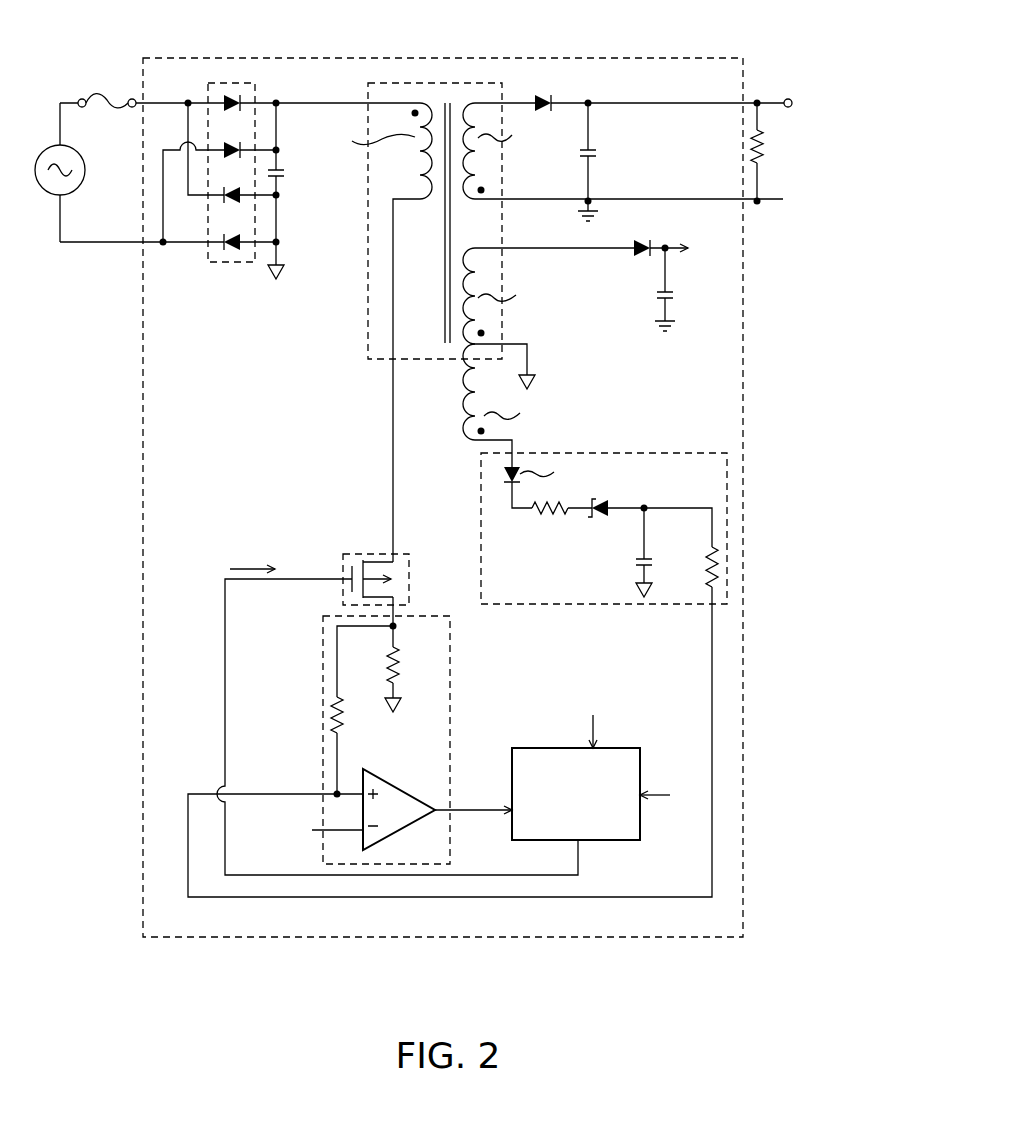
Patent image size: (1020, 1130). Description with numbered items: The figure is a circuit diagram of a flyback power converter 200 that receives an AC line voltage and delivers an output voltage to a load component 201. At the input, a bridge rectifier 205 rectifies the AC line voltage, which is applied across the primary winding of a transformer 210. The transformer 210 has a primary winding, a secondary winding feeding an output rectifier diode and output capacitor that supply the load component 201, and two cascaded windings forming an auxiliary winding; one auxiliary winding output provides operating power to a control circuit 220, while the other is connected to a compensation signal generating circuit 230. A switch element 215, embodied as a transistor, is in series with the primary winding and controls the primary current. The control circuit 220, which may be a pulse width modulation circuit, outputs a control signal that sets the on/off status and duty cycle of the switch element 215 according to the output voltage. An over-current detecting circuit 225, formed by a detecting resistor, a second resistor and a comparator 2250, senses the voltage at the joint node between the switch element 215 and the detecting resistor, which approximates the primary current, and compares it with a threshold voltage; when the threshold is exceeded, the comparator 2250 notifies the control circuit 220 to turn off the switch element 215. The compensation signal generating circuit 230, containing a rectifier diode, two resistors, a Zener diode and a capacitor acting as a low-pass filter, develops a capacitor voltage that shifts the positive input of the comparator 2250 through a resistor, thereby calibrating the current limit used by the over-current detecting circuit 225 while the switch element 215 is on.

The flyback power converter 200 is at (143, 535).
The load component 201 is at (762, 155).
The bridge rectifier 205 is at (238, 83).
The transformer 210 is at (431, 83).
The switch element 215 is at (372, 553).
The control circuit 220 is at (551, 748).
The over-current detecting circuit 225 is at (396, 730).
The compensation signal generating circuit 230 is at (631, 452).
The comparator 2250 is at (402, 779).